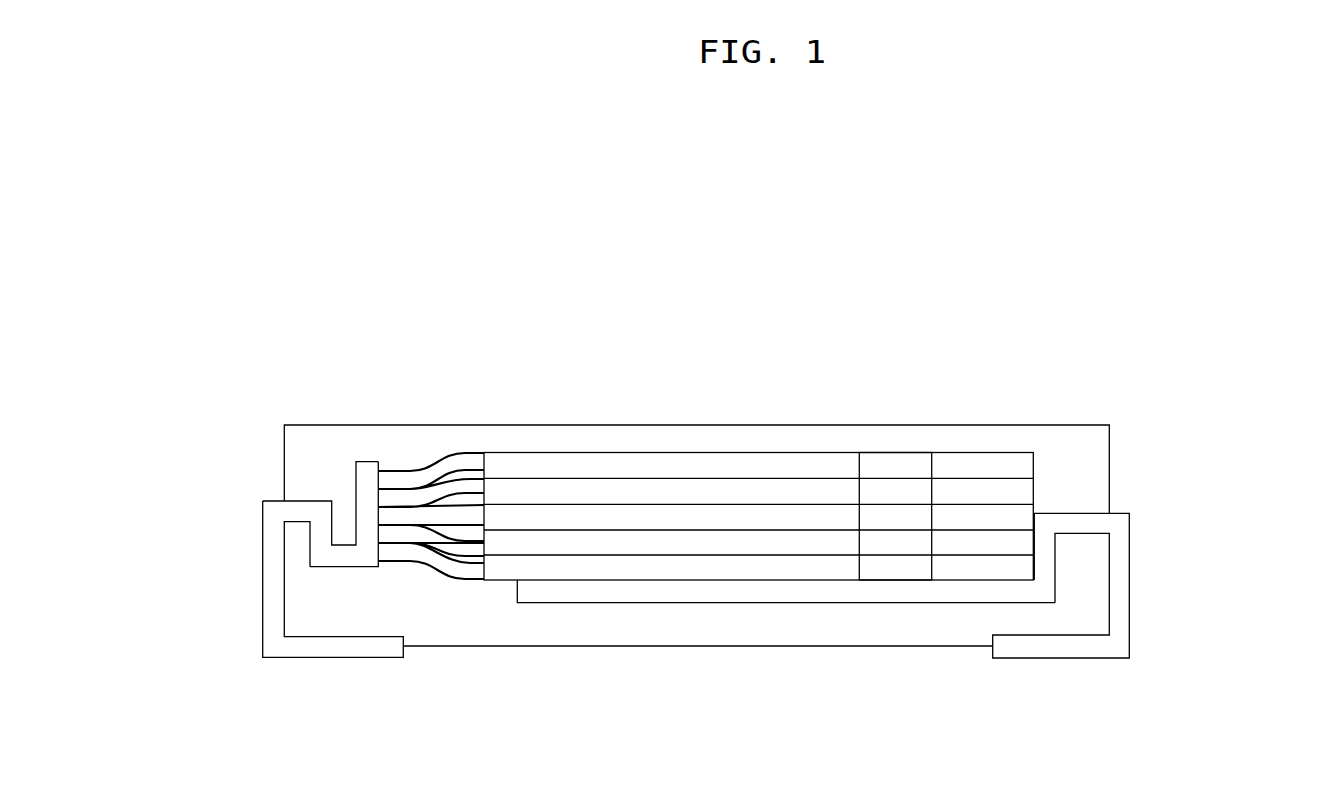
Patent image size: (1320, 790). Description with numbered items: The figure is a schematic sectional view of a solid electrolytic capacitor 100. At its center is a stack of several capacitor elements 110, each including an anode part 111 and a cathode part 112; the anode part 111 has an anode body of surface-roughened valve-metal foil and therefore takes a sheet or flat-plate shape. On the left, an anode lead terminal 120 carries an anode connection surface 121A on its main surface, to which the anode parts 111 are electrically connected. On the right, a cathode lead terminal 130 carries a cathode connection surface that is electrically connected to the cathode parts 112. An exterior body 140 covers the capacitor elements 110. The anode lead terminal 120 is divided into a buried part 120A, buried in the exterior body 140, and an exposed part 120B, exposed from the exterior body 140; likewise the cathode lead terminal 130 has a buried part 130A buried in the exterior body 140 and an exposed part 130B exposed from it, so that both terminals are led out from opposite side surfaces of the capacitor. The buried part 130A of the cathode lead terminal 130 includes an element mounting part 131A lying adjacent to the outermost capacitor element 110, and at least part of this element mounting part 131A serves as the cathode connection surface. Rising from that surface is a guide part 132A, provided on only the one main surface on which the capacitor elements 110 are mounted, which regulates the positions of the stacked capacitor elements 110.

The solid electrolytic capacitor 100 is at (855, 197).
The capacitor element 110 is at (660, 315).
The anode part 111 is at (442, 452).
The cathode part 112 is at (675, 462).
The anode lead terminal 120 is at (138, 357).
The buried part 120A is at (311, 548).
The exposed part 120B is at (270, 590).
The anode connection surface 121A is at (381, 567).
The cathode lead terminal 130 is at (1230, 453).
The buried part 130A is at (1070, 522).
The exposed part 130B is at (1132, 605).
The element mounting part 131A is at (717, 590).
The guide part 132A is at (888, 463).
The exterior body 140 is at (1074, 462).